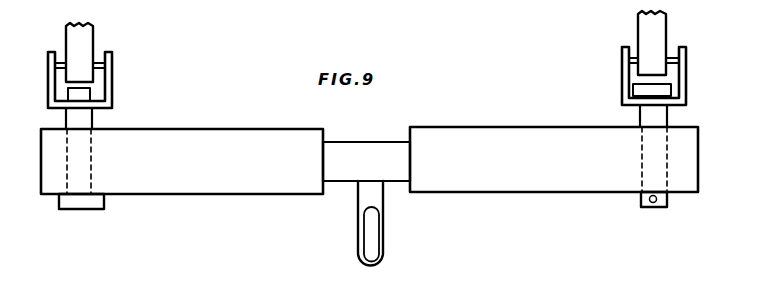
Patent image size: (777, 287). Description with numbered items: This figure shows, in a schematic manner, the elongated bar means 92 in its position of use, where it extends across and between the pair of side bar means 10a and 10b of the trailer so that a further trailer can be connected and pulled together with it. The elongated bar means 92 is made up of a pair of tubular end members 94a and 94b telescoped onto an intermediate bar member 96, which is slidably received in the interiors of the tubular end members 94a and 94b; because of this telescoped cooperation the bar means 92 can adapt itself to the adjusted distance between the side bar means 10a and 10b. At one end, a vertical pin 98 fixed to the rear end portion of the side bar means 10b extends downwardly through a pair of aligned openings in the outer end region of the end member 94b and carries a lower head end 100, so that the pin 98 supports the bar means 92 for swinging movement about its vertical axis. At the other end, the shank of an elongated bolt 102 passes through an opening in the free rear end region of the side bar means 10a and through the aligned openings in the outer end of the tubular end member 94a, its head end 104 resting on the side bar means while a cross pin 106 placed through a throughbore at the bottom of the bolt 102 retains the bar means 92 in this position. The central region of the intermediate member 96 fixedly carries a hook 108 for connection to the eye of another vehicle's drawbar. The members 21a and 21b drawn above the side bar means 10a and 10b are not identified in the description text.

The elongated bar means 92 is at (278, 116).
The tubular end member 94a is at (537, 180).
The tubular end member 94b is at (187, 129).
The intermediate bar member 96 is at (363, 150).
The vertical pin 98 is at (85, 119).
The lower head end 100 is at (78, 208).
The elongated bolt 102 is at (672, 115).
The head end 104 is at (641, 88).
The cross pin 106 is at (668, 200).
The hook 108 is at (381, 226).
The side bar means 10a is at (686, 93).
The side bar means 10b is at (50, 90).
The support member 21a is at (640, 26).
The support member 21b is at (90, 32).